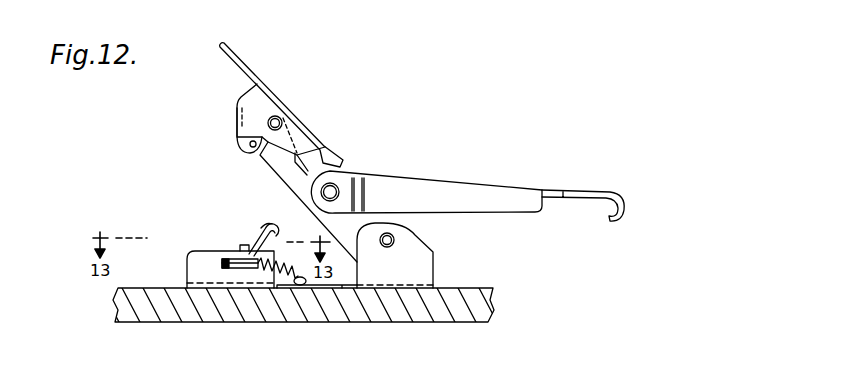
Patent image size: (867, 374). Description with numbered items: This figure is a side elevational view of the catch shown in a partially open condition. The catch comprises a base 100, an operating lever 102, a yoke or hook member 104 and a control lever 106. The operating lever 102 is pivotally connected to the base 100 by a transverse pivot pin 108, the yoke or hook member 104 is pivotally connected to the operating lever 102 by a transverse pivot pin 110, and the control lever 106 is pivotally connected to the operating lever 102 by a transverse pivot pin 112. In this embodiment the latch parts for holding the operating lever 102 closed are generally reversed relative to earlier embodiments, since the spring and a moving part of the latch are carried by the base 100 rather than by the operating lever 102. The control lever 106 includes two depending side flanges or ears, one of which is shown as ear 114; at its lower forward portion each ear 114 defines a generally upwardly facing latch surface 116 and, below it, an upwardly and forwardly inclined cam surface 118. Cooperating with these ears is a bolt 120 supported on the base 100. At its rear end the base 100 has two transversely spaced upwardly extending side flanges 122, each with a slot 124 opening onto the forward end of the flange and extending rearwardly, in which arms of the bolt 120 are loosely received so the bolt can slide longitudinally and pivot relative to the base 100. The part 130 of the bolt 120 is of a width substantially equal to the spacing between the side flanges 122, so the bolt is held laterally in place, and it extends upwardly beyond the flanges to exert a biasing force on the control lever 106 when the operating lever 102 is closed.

The base 100 is at (430, 270).
The operating lever 102 is at (333, 162).
The yoke or hook member 104 is at (512, 186).
The control lever 106 is at (274, 91).
The transverse pivot pin 108 is at (394, 236).
The transverse pivot pin 110 is at (336, 186).
The transverse pivot pin 112 is at (283, 119).
The ear 114 is at (236, 122).
The latch surface 116 is at (246, 146).
The cam surface 118 is at (251, 151).
The bolt 120 is at (280, 231).
The side flange 122 is at (188, 268).
The slot 124 is at (253, 265).
The part of the bolt 130 is at (260, 228).